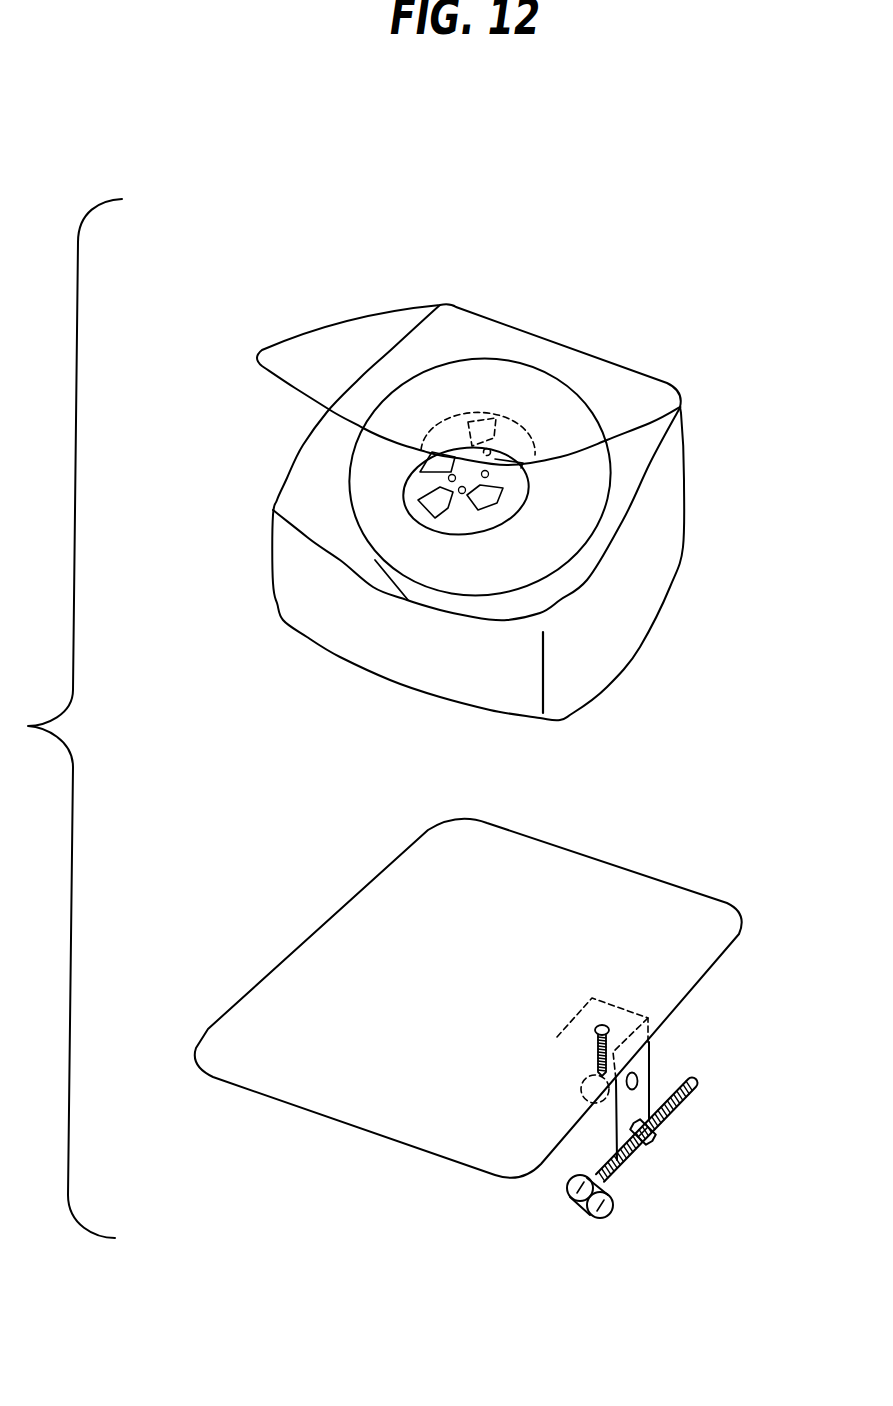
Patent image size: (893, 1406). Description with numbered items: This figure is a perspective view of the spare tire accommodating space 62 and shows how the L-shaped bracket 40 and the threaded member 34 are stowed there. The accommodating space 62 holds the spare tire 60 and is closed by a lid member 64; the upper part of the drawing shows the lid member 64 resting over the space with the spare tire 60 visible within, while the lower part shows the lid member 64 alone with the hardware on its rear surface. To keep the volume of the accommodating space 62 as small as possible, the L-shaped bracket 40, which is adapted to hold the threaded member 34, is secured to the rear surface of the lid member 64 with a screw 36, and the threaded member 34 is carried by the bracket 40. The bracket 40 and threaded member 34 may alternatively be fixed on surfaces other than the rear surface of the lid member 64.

The threaded member 34 is at (680, 1107).
The screw 36 is at (593, 1060).
The L-shaped bracket 40 is at (647, 1073).
The spare tire 60 is at (395, 547).
The accommodating space 62 is at (293, 493).
The lid member 64 is at (285, 363).